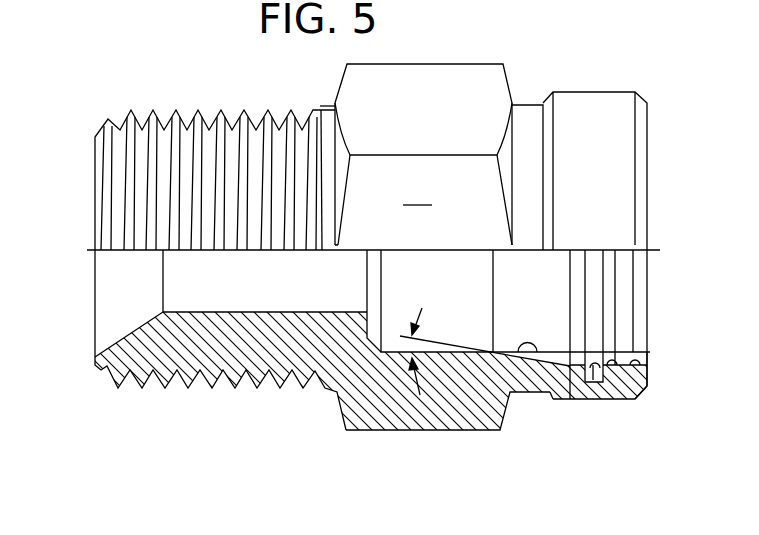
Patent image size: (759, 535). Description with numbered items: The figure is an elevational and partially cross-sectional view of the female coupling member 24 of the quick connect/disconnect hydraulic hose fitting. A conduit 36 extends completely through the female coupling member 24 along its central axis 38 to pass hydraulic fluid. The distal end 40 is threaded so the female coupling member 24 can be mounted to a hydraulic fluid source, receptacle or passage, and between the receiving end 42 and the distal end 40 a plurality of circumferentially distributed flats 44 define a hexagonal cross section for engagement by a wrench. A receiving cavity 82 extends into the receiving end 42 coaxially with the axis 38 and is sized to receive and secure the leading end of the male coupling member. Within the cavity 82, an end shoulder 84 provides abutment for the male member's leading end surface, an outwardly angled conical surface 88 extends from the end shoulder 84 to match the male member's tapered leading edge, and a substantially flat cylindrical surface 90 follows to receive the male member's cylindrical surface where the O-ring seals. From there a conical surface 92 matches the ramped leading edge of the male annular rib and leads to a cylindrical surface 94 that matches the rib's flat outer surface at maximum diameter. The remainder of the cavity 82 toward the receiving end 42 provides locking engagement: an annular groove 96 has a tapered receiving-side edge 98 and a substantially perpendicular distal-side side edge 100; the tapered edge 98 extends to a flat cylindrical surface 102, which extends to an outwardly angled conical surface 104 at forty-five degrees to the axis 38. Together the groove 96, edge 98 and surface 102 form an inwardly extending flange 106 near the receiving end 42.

The female coupling member 24 is at (199, 414).
The conduit 36 is at (197, 312).
The central axis 38 is at (104, 247).
The distal end 40 is at (95, 97).
The receiving end 42 is at (662, 90).
The flats 44 is at (425, 85).
The receiving cavity 82 is at (662, 289).
The end shoulder 84 is at (365, 320).
The conical surface 88 is at (386, 352).
The cylindrical surface 90 is at (372, 343).
The conical surface 92 is at (528, 352).
The cylindrical surface 94 is at (580, 372).
The annular groove 96 is at (602, 382).
The tapered receiving-side edge 98 is at (610, 350).
The distal-side side edge 100 is at (592, 372).
The cylindrical surface 102 is at (637, 365).
The conical surface 104 is at (648, 370).
The inwardly extending flange 106 is at (641, 392).